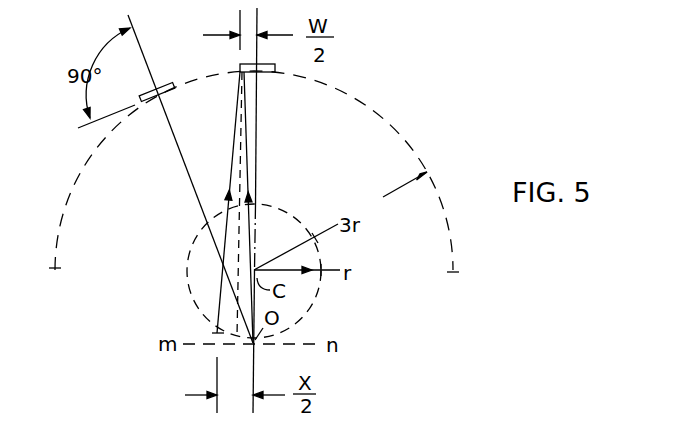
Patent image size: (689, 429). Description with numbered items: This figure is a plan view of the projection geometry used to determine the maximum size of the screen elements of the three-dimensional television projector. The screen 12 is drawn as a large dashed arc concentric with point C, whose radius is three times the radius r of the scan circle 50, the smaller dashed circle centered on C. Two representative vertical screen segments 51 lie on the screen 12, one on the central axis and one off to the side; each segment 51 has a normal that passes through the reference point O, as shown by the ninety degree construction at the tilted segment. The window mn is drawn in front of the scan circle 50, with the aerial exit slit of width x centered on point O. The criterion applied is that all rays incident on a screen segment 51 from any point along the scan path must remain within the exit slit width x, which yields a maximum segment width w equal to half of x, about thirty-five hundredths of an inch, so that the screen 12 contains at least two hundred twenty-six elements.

The vertical screen segment 51 is at (153, 100).
The screen 12 is at (383, 119).
The scan circle 50 is at (316, 306).